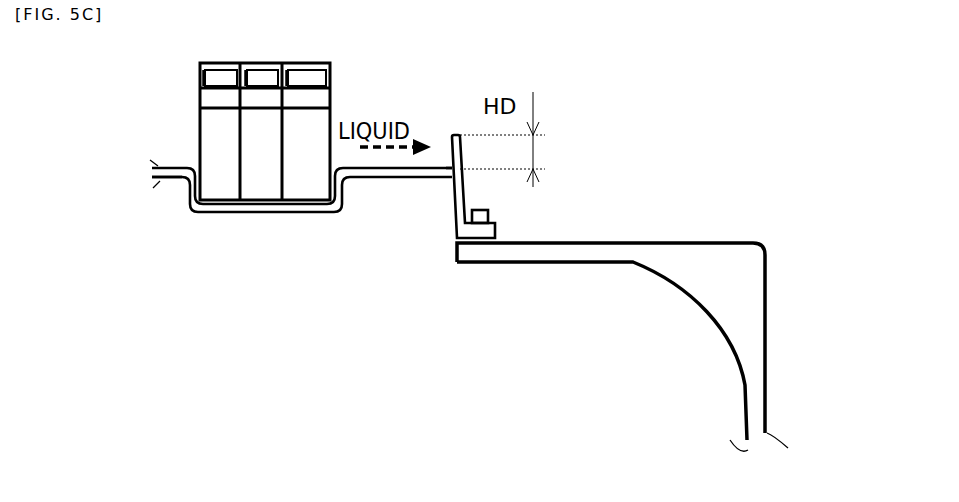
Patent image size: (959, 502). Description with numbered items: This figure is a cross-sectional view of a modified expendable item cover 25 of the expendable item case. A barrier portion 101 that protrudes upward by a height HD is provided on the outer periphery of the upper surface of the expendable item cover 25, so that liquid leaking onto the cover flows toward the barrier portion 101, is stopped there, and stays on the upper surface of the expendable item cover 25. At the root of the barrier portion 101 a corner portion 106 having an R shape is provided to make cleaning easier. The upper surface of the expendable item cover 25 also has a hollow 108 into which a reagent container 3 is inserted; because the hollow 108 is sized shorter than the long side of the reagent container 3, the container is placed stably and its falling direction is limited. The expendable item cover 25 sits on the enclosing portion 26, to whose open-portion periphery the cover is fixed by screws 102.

The reagent container 3 is at (217, 63).
The expendable item cover 25 is at (262, 212).
The enclosing portion 26 is at (768, 335).
The barrier portion 101 is at (452, 135).
The screw 102 is at (490, 215).
The corner portion 106 is at (452, 170).
The hollow 108 is at (197, 177).